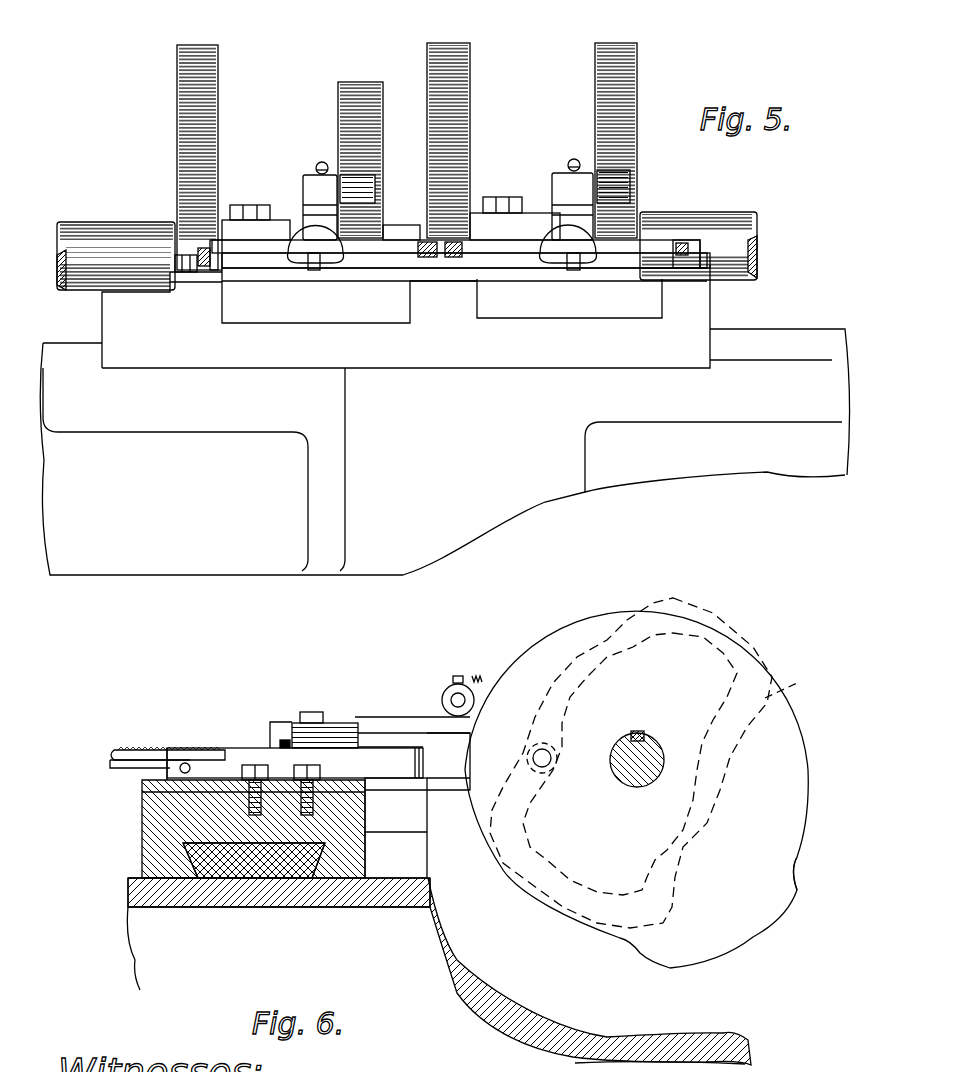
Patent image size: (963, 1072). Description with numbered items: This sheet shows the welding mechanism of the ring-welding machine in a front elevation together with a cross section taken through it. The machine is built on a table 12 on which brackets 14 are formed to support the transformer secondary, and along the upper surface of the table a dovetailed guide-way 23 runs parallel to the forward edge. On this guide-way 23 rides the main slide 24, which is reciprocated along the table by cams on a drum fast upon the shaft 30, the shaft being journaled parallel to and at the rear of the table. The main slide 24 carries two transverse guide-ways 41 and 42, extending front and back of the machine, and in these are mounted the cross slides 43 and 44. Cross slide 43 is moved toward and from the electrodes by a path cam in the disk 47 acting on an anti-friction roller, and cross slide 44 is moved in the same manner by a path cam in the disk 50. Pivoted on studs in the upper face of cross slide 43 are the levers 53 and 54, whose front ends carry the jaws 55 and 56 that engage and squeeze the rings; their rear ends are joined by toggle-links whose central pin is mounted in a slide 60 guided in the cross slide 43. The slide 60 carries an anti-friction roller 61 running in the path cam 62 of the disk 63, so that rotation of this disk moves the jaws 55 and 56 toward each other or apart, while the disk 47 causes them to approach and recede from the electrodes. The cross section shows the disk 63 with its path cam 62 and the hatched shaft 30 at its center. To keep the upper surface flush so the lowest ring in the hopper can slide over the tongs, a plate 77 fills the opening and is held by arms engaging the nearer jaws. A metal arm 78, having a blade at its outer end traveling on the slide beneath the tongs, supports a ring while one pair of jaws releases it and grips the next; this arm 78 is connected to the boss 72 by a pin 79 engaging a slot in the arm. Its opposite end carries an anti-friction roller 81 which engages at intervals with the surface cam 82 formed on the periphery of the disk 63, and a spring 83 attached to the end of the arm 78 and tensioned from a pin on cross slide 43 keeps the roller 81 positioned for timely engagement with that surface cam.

In FIG. 5, the table 12 is at (136, 563).
In FIG. 6, the table 12 is at (130, 943).
In FIG. 5, the brackets 14 is at (198, 411).
In FIG. 5, the dovetailed guide-way 23 is at (778, 338).
In FIG. 6, the dovetailed guide-way 23 is at (316, 880).
In FIG. 5, the main slide 24 is at (406, 316).
In FIG. 6, the main slide 24 is at (142, 853).
In FIG. 5, the shaft 30 is at (742, 238).
In FIG. 6, the shaft 30 is at (650, 752).
In FIG. 5, the guide-way 41 is at (222, 302).
In FIG. 5, the guide-way 42 is at (477, 300).
In FIG. 5, the cross slide 43 is at (316, 296).
In FIG. 5, the cross slide 44 is at (558, 298).
In FIG. 5, the disk 47 is at (208, 100).
In FIG. 5, the disk 50 is at (450, 168).
In FIG. 5, the lever 53 is at (247, 262).
In FIG. 5, the lever 54 is at (384, 262).
In FIG. 6, the lever 54 is at (408, 768).
In FIG. 5, the jaw 55 is at (268, 250).
In FIG. 5, the jaw 56 is at (382, 258).
In FIG. 6, the jaw 56 is at (140, 762).
In FIG. 6, the slide 60 is at (465, 780).
In FIG. 6, the anti-friction roller 61 is at (556, 747).
In FIG. 6, the path cam 62 is at (793, 687).
In FIG. 5, the disk 63 is at (370, 93).
In FIG. 6, the disk 63 is at (627, 588).
In FIG. 5, the boss 72 is at (290, 230).
In FIG. 6, the boss 72 is at (340, 737).
In FIG. 6, the plate 77 is at (210, 748).
In FIG. 6, the metal arm 78 is at (270, 737).
In FIG. 5, the pin 79 is at (307, 205).
In FIG. 6, the pin 79 is at (313, 712).
In FIG. 5, the anti-friction roller 81 is at (370, 195).
In FIG. 6, the anti-friction roller 81 is at (444, 690).
In FIG. 6, the surface cam 82 is at (795, 861).
In FIG. 5, the spring 83 is at (320, 162).
In FIG. 6, the spring 83 is at (477, 675).